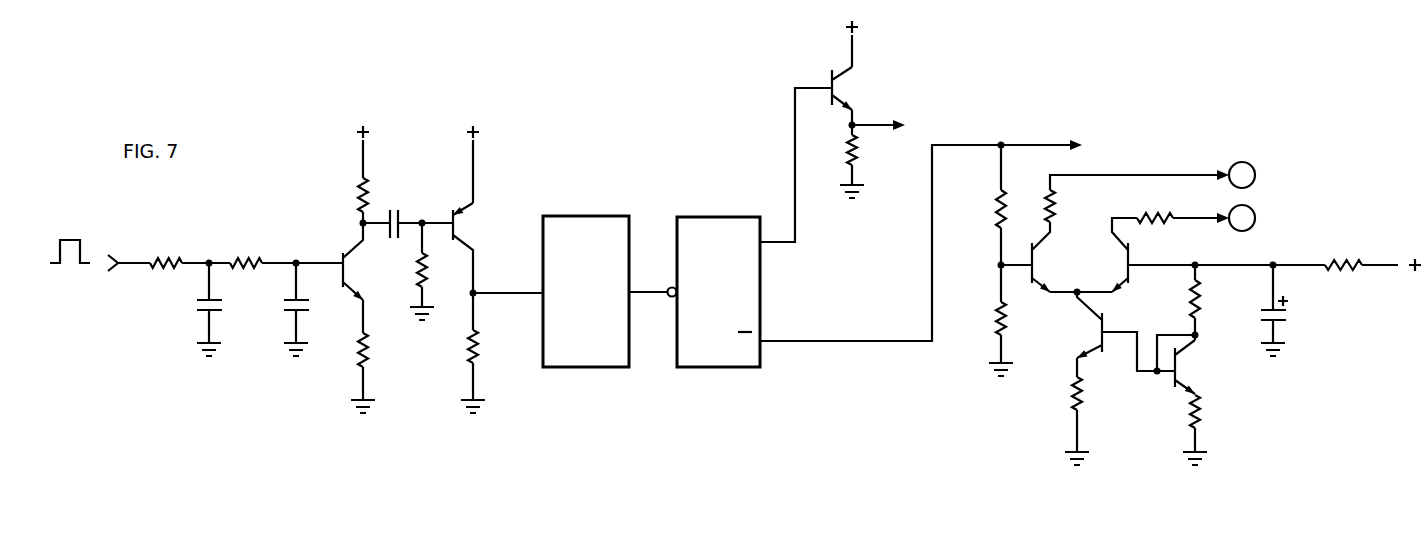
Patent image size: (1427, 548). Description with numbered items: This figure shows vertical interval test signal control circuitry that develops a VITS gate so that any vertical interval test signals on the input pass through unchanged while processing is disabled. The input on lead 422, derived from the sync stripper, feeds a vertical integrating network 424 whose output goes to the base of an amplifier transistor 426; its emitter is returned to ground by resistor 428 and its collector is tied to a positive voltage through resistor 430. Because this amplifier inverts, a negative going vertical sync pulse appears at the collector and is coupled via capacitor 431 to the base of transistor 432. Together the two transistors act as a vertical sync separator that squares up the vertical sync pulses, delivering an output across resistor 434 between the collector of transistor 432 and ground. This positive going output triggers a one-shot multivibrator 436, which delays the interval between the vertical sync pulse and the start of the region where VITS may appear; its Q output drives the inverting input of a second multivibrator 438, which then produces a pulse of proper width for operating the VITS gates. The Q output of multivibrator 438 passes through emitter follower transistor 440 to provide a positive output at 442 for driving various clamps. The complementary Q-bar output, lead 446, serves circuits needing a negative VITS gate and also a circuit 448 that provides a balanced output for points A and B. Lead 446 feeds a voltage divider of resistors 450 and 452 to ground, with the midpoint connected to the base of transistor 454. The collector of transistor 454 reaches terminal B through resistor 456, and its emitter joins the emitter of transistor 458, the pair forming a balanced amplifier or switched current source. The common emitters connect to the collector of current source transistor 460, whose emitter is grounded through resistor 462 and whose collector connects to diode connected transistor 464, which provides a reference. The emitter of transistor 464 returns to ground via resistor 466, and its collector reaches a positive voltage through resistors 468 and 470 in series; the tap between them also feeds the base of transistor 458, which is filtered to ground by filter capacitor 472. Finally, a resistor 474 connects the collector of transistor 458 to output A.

The lead 422 is at (113, 258).
The vertical integrating network 424 is at (250, 252).
The amplifier transistor 426 is at (355, 265).
The resistor 428 is at (372, 341).
The resistor 430 is at (356, 195).
The capacitor 431 is at (392, 208).
The transistor 432 is at (463, 228).
The resistor 434 is at (480, 341).
The one-shot multivibrator 436 is at (588, 369).
The multivibrator 438 is at (729, 369).
The emitter follower transistor 440 is at (840, 88).
The positive output 442 is at (876, 128).
The Q-bar output lead 446 is at (1040, 144).
The circuit 448 is at (1093, 257).
The resistor 450 is at (995, 205).
The resistor 452 is at (995, 322).
The transistor 454 is at (1040, 266).
The resistor 456 is at (1062, 205).
The transistor 458 is at (1134, 276).
The current source transistor 460 is at (1090, 330).
The resistor 462 is at (1090, 397).
The diode connected transistor 464 is at (1183, 368).
The resistor 466 is at (1205, 404).
The resistor 468 is at (1187, 310).
The resistor 470 is at (1341, 262).
The filter capacitor 472 is at (1290, 313).
The resistor 474 is at (1156, 221).